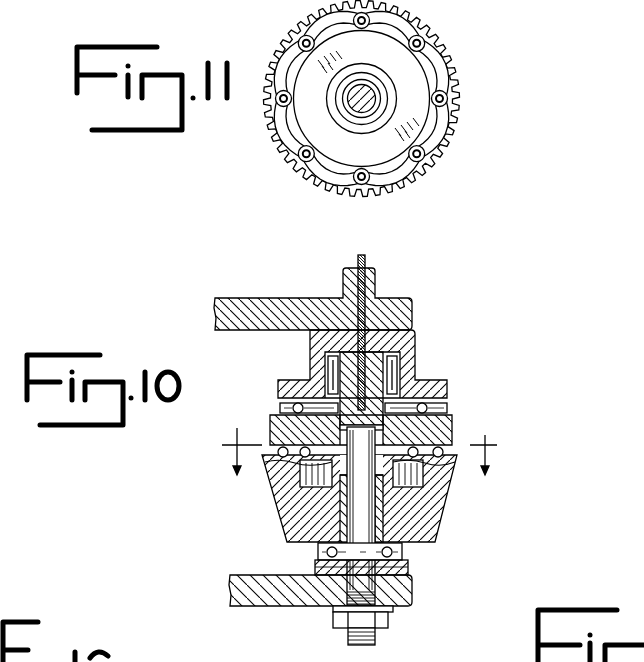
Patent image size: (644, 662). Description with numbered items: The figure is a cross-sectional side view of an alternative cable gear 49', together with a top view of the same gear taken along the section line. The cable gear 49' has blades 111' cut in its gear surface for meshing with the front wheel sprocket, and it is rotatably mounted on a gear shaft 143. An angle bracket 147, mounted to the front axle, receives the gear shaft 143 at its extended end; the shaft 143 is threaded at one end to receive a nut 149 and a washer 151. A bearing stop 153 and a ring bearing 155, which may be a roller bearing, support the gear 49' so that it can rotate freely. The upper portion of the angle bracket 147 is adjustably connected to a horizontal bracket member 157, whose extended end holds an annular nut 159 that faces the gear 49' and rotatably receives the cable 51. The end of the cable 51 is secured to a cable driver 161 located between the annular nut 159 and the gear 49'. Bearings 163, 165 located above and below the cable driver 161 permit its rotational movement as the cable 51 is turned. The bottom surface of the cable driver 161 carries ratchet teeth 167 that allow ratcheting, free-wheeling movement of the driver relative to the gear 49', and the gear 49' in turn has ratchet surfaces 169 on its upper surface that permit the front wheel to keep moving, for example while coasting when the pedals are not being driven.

In FIG. 10, the cable 51 is at (368, 263).
In FIG. 10, the horizontal bracket member 157 is at (245, 307).
In FIG. 10, the annular nut 159 is at (415, 362).
In FIG. 10, the bearing 163 is at (264, 406).
In FIG. 11, the ratchet teeth 167 is at (446, 108).
In FIG. 10, the ratchet teeth 167 is at (414, 450).
In FIG. 10, the cable driver 161 is at (455, 432).
In FIG. 10, the bearing 165 is at (255, 454).
In FIG. 10, the cable gear 49' is at (412, 465).
In FIG. 11, the ratchet surfaces 169 is at (412, 180).
In FIG. 10, the ratchet surfaces 169 is at (422, 478).
In FIG. 10, the blades 111' is at (437, 515).
In FIG. 10, the gear shaft 143 is at (428, 540).
In FIG. 10, the ring bearing 155 is at (303, 552).
In FIG. 10, the bearing stop 153 is at (318, 570).
In FIG. 10, the angle bracket 147 is at (298, 598).
In FIG. 10, the washer 151 is at (395, 610).
In FIG. 10, the nut 149 is at (390, 625).